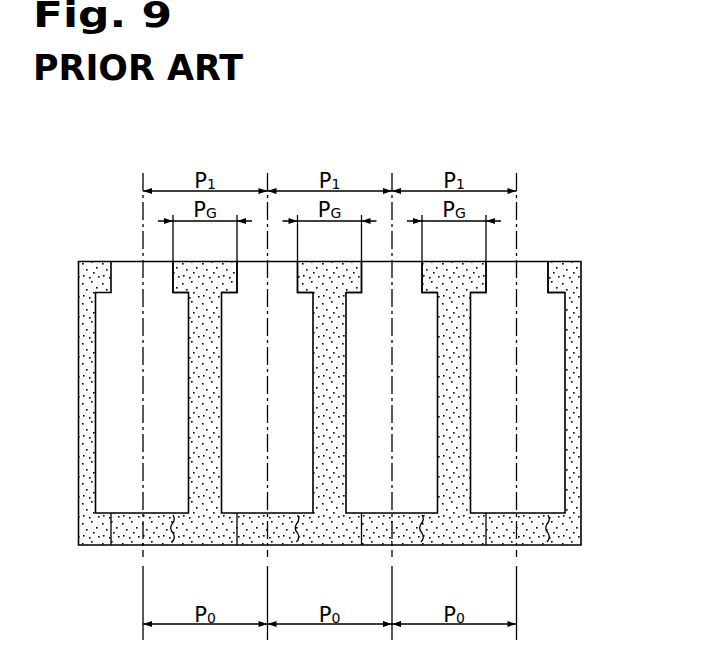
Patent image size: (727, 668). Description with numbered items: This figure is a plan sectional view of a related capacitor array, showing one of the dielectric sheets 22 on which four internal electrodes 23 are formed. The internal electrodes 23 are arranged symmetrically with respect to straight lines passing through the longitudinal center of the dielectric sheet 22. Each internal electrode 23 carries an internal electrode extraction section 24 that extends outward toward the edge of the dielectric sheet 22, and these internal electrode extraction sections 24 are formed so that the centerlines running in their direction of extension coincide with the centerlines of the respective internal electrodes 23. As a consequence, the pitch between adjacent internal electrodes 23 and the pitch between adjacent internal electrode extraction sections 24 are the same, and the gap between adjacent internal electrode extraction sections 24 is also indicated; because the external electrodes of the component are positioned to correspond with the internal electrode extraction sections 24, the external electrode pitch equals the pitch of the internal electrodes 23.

The dielectric sheet 22 is at (572, 415).
The internal electrode 23 is at (155, 488).
The internal electrode extraction section 24 is at (148, 278).